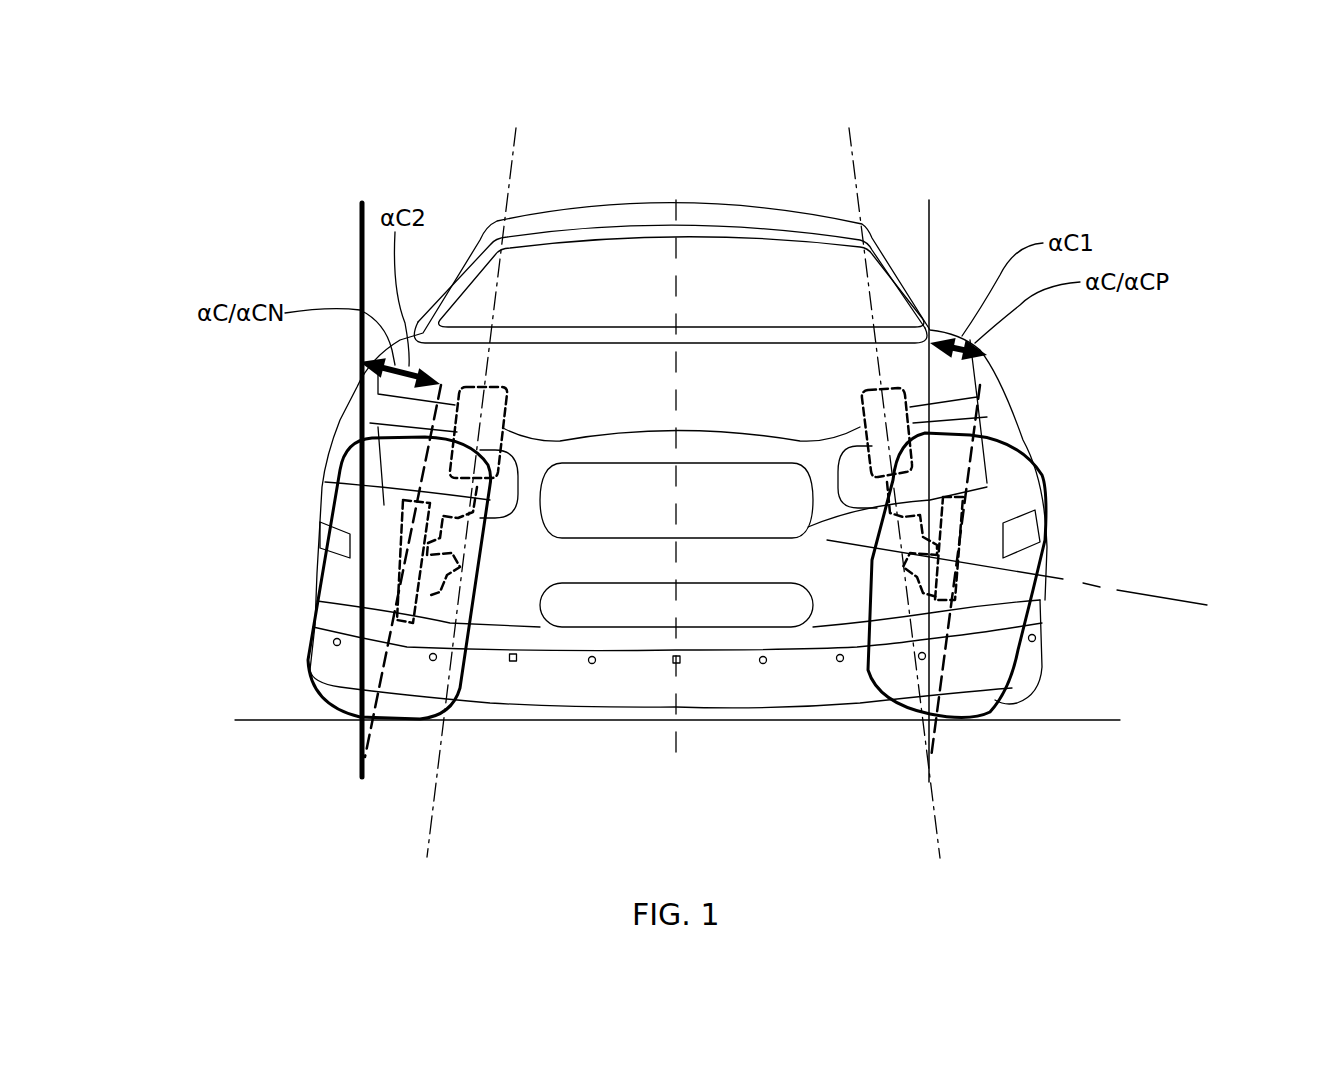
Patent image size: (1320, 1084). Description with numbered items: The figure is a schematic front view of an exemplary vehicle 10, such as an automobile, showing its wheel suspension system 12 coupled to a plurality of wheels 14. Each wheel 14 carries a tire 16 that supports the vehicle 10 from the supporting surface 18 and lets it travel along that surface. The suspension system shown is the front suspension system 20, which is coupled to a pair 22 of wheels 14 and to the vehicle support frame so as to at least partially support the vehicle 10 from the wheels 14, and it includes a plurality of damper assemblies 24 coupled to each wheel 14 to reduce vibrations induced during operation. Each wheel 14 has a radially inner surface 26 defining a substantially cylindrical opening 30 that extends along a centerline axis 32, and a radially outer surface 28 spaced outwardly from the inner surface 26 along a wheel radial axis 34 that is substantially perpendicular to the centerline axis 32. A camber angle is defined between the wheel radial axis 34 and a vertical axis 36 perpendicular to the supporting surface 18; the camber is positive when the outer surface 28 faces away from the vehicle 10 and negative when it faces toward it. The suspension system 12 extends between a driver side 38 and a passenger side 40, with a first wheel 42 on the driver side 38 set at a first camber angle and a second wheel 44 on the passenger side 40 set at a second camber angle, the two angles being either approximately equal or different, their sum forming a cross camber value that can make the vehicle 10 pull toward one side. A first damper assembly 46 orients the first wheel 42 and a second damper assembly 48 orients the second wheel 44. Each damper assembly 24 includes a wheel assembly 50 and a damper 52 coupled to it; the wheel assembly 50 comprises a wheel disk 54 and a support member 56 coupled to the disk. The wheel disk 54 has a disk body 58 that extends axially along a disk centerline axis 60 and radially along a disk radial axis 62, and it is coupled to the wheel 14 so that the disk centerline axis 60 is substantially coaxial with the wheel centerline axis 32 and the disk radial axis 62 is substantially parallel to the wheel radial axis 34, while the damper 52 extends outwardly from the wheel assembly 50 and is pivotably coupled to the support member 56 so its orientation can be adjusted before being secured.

The vehicle 10 is at (1108, 147).
The wheel suspension system 12 is at (1016, 404).
The wheel 14 is at (312, 642).
The tire 16 is at (345, 466).
The supporting surface 18 is at (1078, 720).
The front suspension system 20 is at (830, 375).
The pair of wheels 22 is at (1075, 418).
The damper assembly 24 is at (463, 384).
The radially inner surface 26 is at (1047, 533).
The radially outer surface 28 is at (1035, 440).
The cylindrical opening 30 is at (1060, 591).
The wheel centerline axis 32 is at (1173, 594).
The wheel radial axis 34 is at (428, 426).
The vertical axis 36 is at (362, 205).
The driver side 38 is at (893, 190).
The passenger side 40 is at (482, 178).
The first wheel 42 is at (980, 707).
The second wheel 44 is at (420, 706).
The first damper assembly 46 is at (855, 610).
The second damper assembly 48 is at (502, 578).
The wheel assembly 50 is at (552, 557).
The damper 52 is at (507, 412).
The wheel disk 54 is at (398, 562).
The support member 56 is at (440, 577).
The disk body 58 is at (693, 560).
The disk centerline axis 60 is at (1190, 608).
The disk radial axis 62 is at (360, 733).